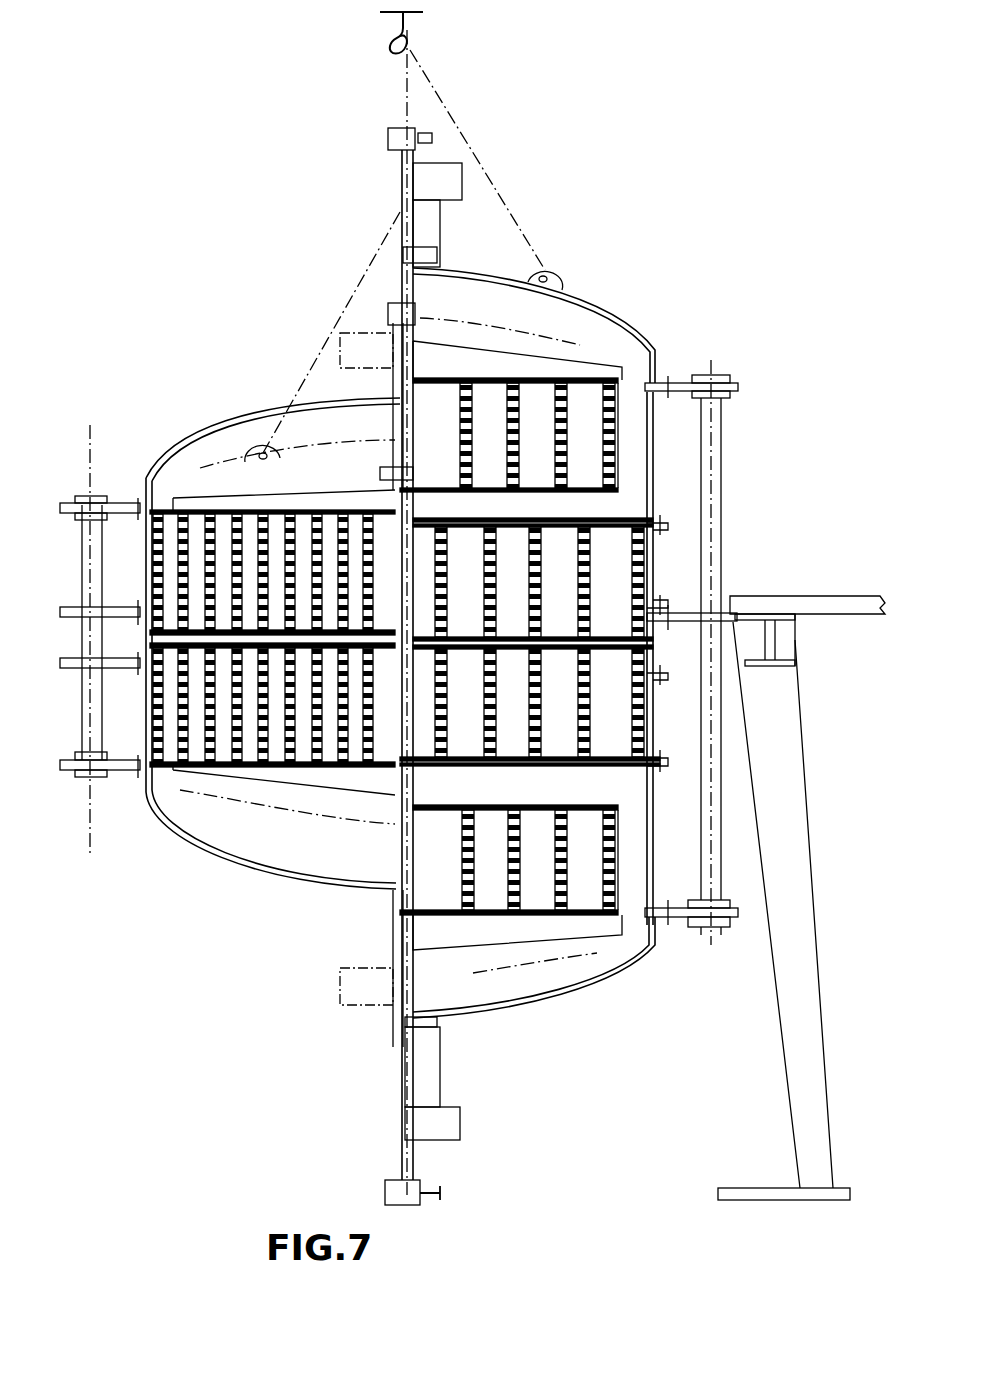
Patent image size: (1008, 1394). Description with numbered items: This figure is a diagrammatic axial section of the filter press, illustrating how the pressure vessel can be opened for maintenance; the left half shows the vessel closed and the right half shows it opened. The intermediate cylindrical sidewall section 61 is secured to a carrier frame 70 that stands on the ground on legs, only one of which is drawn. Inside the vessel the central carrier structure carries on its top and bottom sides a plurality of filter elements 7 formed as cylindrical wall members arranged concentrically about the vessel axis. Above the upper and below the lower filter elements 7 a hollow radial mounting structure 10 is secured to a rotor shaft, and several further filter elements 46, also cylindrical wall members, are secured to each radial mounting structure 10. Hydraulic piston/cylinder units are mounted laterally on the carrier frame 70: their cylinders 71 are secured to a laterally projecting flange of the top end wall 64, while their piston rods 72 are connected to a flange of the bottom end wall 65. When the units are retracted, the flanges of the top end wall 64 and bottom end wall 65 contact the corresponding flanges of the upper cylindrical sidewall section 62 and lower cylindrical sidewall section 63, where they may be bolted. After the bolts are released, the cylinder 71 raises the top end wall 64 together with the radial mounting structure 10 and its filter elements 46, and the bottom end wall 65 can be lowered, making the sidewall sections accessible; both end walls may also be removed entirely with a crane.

The radial mounting structure 10 is at (565, 372).
The top end wall 64 is at (652, 343).
The filter elements 46 is at (567, 440).
The cylinders 71 is at (712, 493).
The upper cylindrical sidewall section 62 is at (650, 560).
The intermediate cylindrical sidewall section 61 is at (648, 642).
The filter elements 7 is at (490, 598).
The carrier frame 70 is at (783, 708).
The lower cylindrical sidewall section 63 is at (650, 716).
The piston rods 72 is at (715, 828).
The bottom end wall 65 is at (571, 1002).